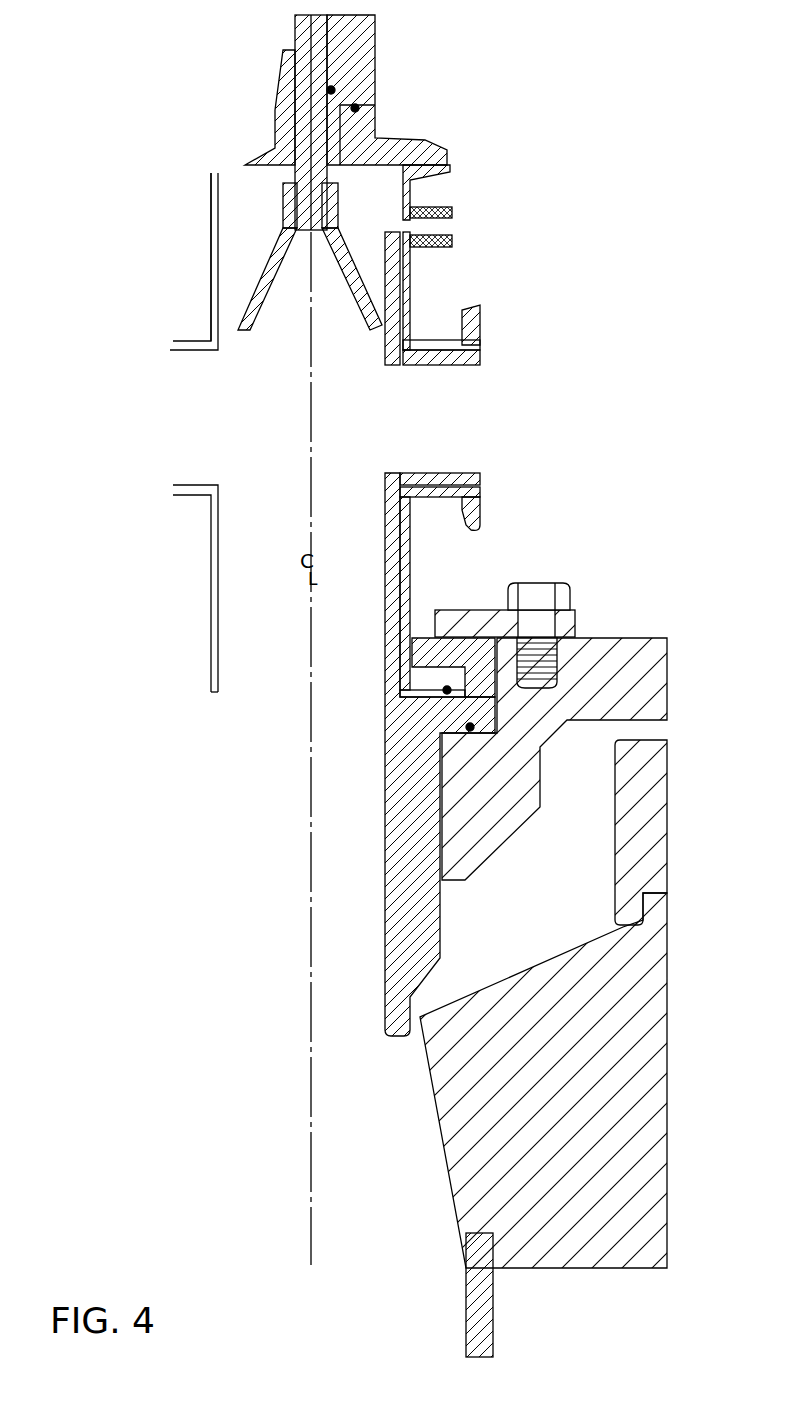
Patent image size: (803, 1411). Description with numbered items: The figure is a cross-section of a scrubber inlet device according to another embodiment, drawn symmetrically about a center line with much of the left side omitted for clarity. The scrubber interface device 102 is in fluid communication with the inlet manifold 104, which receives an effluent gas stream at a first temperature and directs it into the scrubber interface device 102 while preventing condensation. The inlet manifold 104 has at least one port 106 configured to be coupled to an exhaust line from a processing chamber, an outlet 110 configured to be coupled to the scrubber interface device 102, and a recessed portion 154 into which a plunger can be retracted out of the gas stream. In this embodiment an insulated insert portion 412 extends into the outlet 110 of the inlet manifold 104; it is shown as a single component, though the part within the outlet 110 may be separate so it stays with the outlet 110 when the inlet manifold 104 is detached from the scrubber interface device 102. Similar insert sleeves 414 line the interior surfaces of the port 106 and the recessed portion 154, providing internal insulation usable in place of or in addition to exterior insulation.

The scrubber interface device 102 is at (622, 630).
The inlet manifold 104 is at (193, 333).
The port 106 is at (470, 510).
The outlet 110 is at (211, 562).
The recessed portion 154 is at (211, 220).
The insulated insert portion 412 is at (398, 812).
The insert sleeve 414 is at (385, 345).